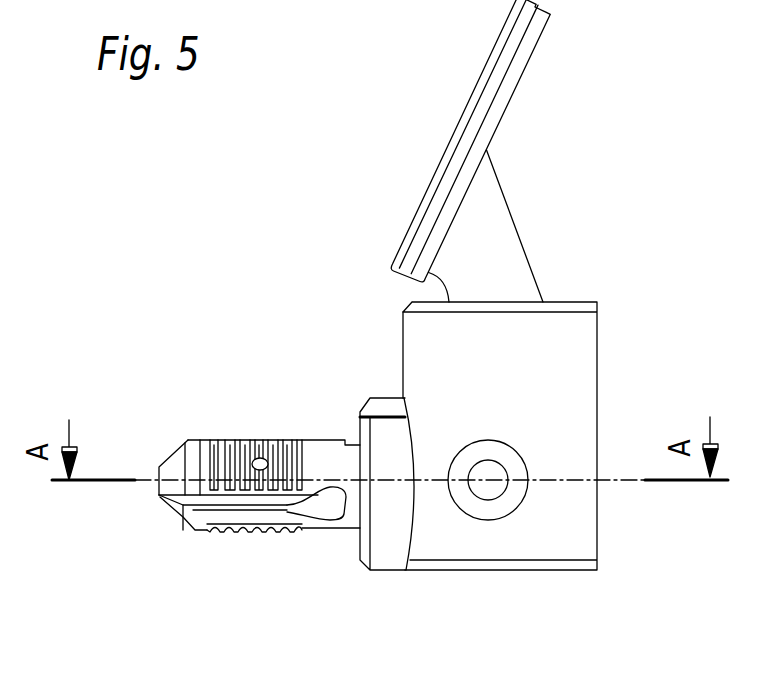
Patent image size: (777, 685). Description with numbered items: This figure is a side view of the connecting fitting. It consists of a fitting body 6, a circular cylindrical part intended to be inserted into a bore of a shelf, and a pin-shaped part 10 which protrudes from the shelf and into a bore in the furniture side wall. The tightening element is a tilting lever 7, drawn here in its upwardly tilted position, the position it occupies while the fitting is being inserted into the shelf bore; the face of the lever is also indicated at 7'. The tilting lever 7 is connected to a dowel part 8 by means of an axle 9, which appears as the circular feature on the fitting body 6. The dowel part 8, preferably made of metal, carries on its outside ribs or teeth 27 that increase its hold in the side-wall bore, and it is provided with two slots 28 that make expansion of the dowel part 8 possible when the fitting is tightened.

The fitting body 6 is at (542, 345).
The tilting lever 7 is at (520, 151).
The plate surface 7' is at (450, 137).
The dowel part 8 is at (188, 533).
The axle 9 is at (488, 481).
The pin-shaped part 10 is at (188, 412).
The ribs or teeth 27 is at (235, 450).
The slots 28 is at (257, 510).